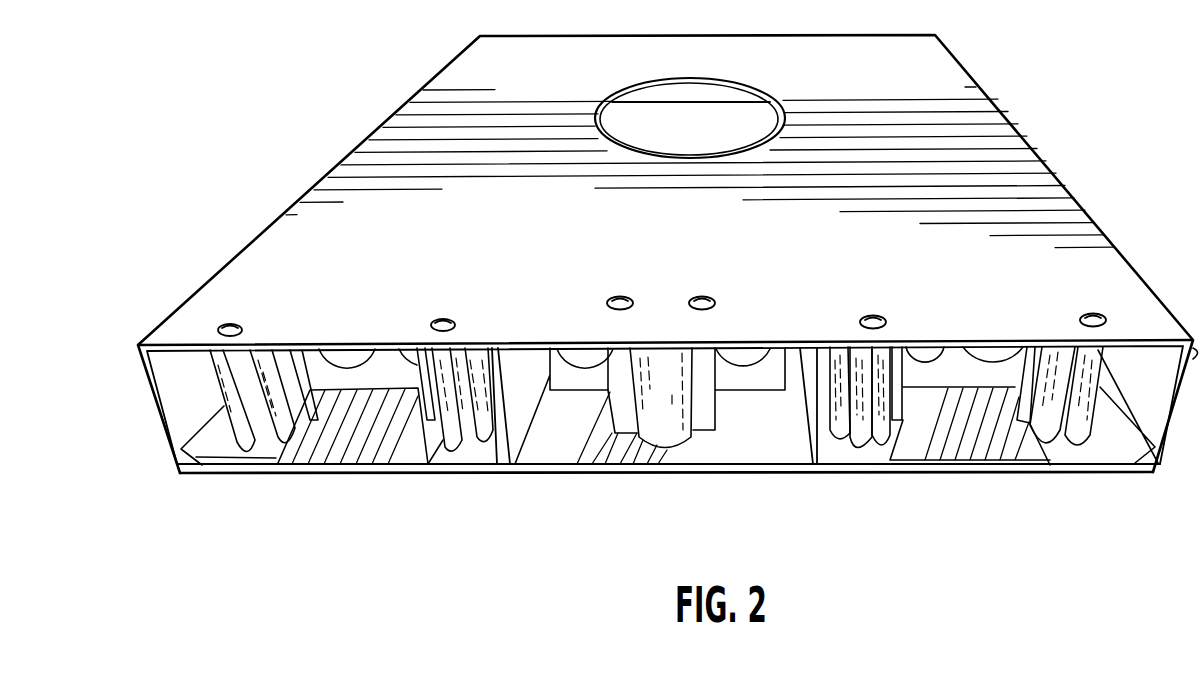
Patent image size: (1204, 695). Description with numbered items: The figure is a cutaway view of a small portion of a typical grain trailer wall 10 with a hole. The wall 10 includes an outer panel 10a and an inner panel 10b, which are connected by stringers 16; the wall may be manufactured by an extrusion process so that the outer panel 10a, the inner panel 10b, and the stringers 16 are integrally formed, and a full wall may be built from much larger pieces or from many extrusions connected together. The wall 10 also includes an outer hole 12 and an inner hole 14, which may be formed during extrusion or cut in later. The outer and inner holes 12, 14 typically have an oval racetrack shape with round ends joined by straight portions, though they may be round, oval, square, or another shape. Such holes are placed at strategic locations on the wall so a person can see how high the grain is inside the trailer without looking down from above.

The wall 10 is at (997, 143).
The outer panel 10a is at (1082, 270).
The inner panel 10b is at (1015, 467).
The outer hole 12 is at (784, 117).
The inner hole 14 is at (712, 157).
The stringers 16 is at (500, 443).